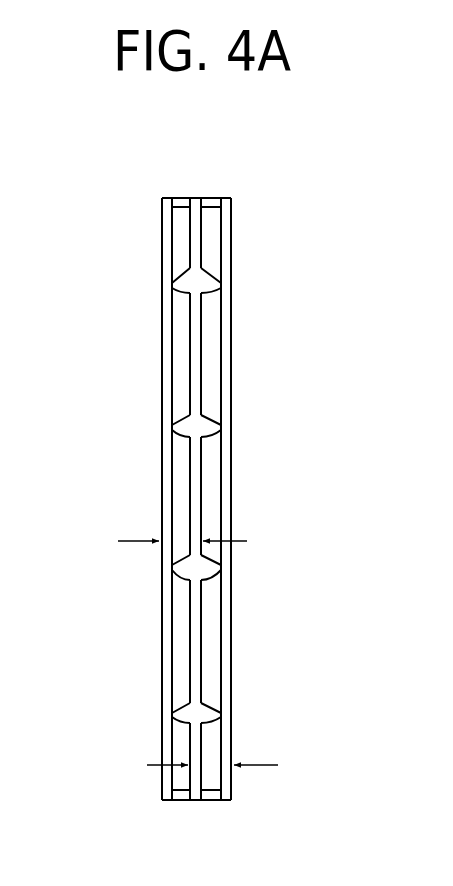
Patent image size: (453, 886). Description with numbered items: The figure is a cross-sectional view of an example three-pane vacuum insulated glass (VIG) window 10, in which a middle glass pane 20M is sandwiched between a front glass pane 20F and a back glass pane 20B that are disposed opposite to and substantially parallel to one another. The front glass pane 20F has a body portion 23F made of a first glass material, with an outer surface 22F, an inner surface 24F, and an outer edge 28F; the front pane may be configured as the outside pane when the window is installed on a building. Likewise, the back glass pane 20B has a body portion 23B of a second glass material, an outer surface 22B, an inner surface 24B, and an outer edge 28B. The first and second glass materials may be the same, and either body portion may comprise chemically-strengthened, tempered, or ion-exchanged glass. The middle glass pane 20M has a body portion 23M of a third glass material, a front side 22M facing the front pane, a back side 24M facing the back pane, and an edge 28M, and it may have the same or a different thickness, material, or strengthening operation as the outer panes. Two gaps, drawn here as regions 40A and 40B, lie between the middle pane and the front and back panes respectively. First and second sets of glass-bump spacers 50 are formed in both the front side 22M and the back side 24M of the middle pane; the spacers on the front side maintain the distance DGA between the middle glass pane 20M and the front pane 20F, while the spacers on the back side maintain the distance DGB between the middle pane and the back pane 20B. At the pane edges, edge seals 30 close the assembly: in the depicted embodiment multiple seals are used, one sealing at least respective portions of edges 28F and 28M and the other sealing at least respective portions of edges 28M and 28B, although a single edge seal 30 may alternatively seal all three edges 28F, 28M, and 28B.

The VIG window 10 is at (189, 155).
The front glass pane 20F is at (155, 250).
The back glass pane 20B is at (245, 303).
The middle glass pane 20M is at (216, 262).
The outer surface of front glass pane 22F is at (168, 280).
The outer surface of back glass pane 22B is at (232, 240).
The front side of middle glass pane 22M is at (190, 450).
The body portion of front glass pane 23F is at (170, 410).
The body portion of back glass pane 23B is at (228, 413).
The body portion of middle glass pane 23M is at (201, 520).
The inner surface of front glass pane 24F is at (170, 228).
The inner surface of back glass pane 24B is at (221, 238).
The back side of middle glass pane 24M is at (203, 463).
The outer edge of front glass pane 28F is at (170, 800).
The outer edge of back glass pane 28B is at (226, 800).
The edge of middle glass pane 28M is at (215, 207).
The edge seal 30 is at (181, 198).
The first gap 40A is at (182, 500).
The second gap 40B is at (212, 492).
The glass-bump spacers 50 is at (185, 418).
The distance between middle glass pane and front pane DGA is at (120, 543).
The distance between middle pane and back pane DGB is at (262, 764).